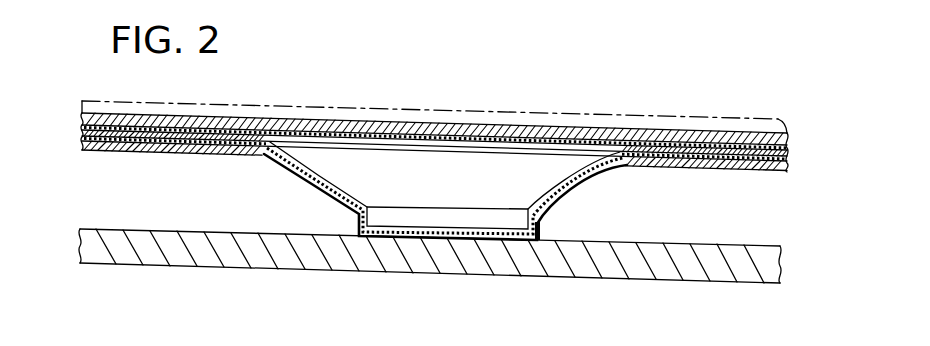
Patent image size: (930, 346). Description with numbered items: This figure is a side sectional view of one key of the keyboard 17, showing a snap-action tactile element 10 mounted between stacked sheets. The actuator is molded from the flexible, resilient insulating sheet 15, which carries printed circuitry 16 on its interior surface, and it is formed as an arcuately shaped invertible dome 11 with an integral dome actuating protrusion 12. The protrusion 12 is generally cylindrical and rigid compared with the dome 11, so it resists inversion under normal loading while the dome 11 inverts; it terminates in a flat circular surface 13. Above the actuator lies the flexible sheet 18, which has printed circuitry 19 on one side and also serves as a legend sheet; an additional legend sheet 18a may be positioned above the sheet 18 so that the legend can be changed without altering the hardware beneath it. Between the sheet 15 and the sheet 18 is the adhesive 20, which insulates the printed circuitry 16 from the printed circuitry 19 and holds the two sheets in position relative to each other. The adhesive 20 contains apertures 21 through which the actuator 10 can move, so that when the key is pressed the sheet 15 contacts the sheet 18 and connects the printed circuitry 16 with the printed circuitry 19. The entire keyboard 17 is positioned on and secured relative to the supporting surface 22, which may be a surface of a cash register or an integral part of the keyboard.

The snap-action tactile element 10 is at (311, 192).
The invertible dome 11 is at (331, 187).
The dome actuating protrusion 12 is at (545, 230).
The flat circular surface 13 is at (462, 225).
The sheet 15 is at (82, 150).
The printed circuitry 16 is at (82, 142).
The keyboard 17 is at (708, 215).
The flexible sheet 18 is at (82, 113).
The legend sheet 18a is at (365, 117).
The printed circuitry 19 is at (82, 126).
The adhesive 20 is at (82, 133).
The apertures 21 is at (289, 118).
The supporting surface 22 is at (740, 270).